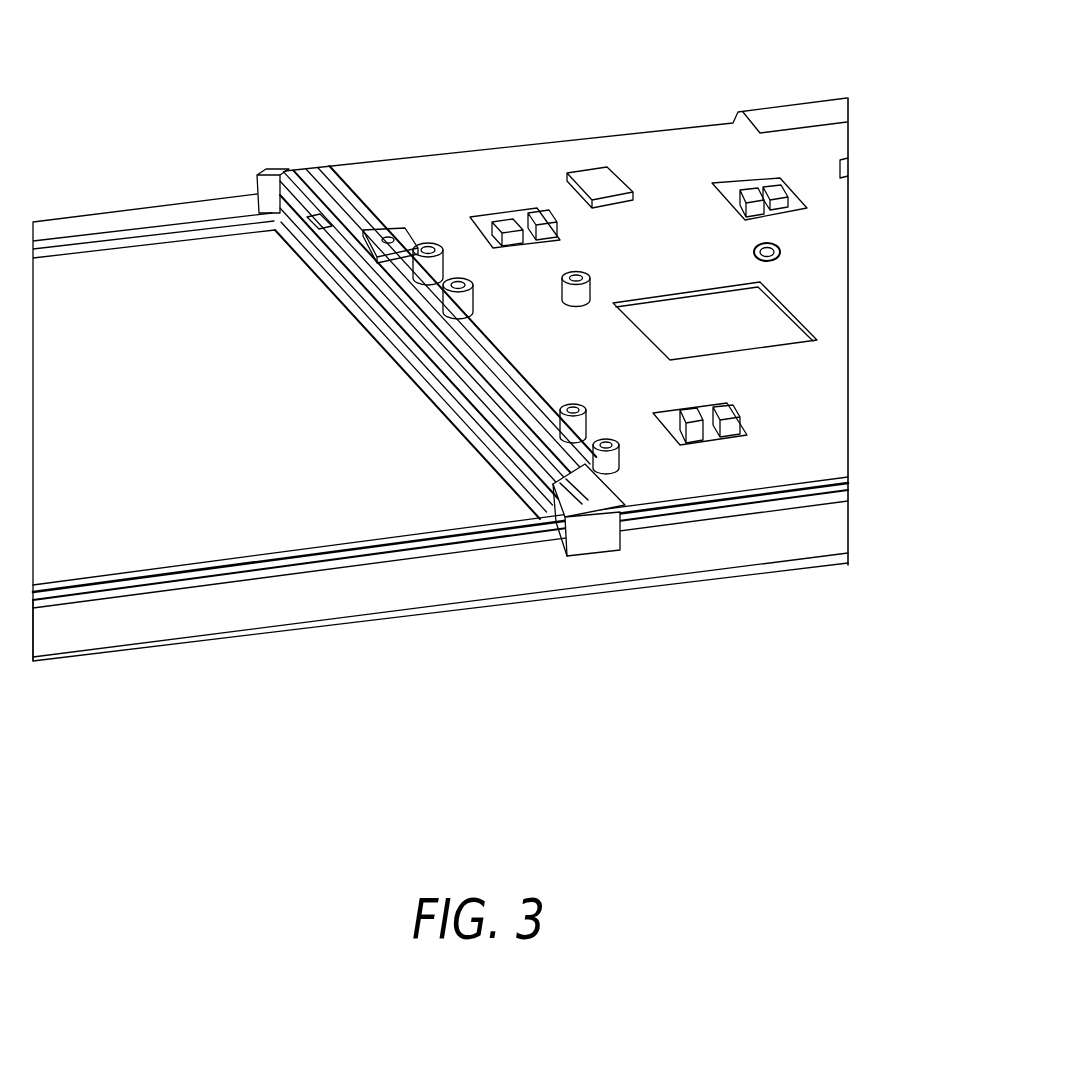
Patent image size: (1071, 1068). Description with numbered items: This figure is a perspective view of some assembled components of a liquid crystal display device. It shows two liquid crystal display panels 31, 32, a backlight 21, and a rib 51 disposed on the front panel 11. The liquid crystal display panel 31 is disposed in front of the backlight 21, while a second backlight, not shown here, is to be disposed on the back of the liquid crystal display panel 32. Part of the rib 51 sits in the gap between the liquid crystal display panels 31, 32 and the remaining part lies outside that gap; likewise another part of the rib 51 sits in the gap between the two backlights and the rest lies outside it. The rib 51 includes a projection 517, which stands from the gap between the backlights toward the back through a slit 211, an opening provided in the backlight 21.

The projection 517 is at (350, 232).
The backlight 21 is at (587, 135).
The slit 211 is at (537, 447).
The liquid crystal display panel 31 is at (757, 515).
The liquid crystal display panel 32 is at (258, 570).
The front panel 11 is at (453, 610).
The rib 51 is at (590, 530).